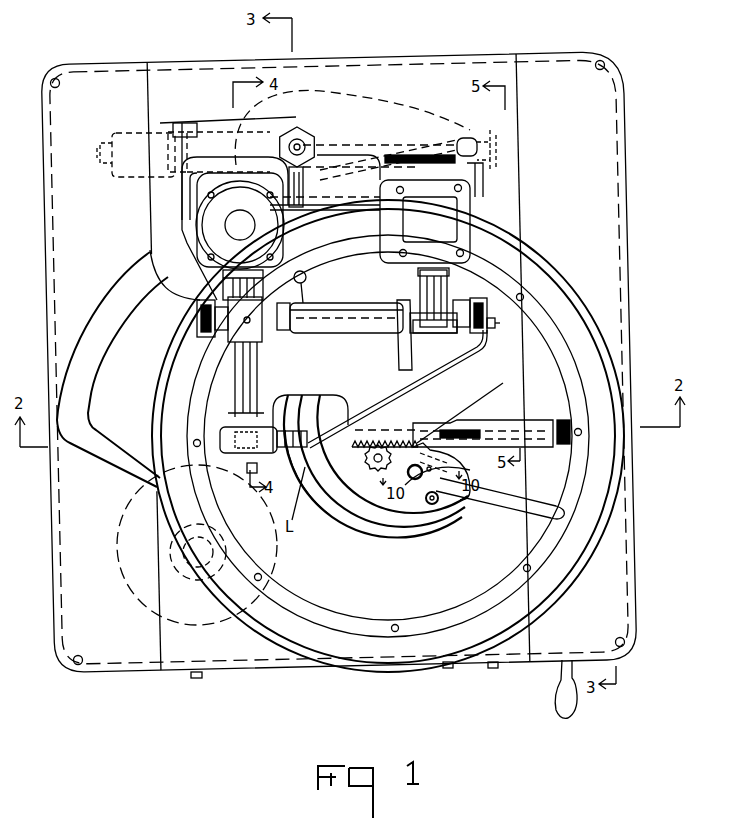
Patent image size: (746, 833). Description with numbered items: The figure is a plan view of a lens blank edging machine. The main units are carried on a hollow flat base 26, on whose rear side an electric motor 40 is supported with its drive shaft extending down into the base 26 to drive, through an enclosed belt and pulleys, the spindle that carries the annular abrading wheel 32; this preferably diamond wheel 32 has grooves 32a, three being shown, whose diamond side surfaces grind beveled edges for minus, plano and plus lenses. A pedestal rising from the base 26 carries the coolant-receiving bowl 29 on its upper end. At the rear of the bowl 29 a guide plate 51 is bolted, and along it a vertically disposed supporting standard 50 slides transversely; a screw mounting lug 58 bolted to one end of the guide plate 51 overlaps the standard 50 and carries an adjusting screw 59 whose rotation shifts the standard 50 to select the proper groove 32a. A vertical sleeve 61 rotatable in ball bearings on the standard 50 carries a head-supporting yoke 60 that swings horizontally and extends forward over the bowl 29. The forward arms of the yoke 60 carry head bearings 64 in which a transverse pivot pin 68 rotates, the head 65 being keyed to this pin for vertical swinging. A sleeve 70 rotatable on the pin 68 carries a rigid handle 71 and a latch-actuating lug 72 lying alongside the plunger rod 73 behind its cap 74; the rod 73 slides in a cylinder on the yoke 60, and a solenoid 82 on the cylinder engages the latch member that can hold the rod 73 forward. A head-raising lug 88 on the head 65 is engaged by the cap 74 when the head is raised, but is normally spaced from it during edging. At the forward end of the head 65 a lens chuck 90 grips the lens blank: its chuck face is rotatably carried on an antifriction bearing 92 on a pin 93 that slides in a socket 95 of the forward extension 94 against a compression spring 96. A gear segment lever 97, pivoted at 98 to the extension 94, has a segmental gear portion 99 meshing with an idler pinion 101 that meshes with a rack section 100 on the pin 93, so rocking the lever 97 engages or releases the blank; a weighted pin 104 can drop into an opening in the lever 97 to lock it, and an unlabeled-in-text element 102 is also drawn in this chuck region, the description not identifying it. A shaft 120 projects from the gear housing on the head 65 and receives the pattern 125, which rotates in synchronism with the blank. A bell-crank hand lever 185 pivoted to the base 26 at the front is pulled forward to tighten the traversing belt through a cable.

The base 26 is at (587, 175).
The coolant-receiving bowl 29 is at (590, 332).
The abrading wheel 32 is at (410, 540).
The grooves 32a is at (395, 532).
The electric motor 40 is at (140, 553).
The supporting standard 50 is at (203, 147).
The guide plate 51 is at (337, 190).
The screw mounting lug 58 is at (495, 170).
The adjusting screw 59 is at (396, 153).
The head-supporting yoke 60 is at (158, 206).
The vertical sleeve 61 is at (299, 133).
The head bearings 64 is at (202, 330).
The head 65 is at (463, 362).
The transverse pivot pin 68 is at (350, 312).
The sleeve 70 is at (372, 305).
The handle 71 is at (303, 270).
The latch-actuating lug 72 is at (405, 334).
The plunger rod 73 is at (427, 303).
The cap 74 is at (427, 334).
The solenoid 82 is at (428, 212).
The head-raising lug 88 is at (489, 325).
The lens chuck 90 is at (313, 510).
The antifriction bearing 92 is at (317, 395).
The pin 93 is at (370, 433).
The forward extension 94 is at (447, 487).
The socket 95 is at (380, 428).
The compression spring 96 is at (478, 423).
The gear segment lever 97 is at (503, 493).
The pivot 98 is at (436, 504).
The segmental gear portion 99 is at (415, 446).
The rack section 100 is at (388, 440).
The idler pinion 101 is at (373, 470).
The link 102 is at (474, 406).
The weighted pin 104 is at (413, 527).
The shaft 120 is at (287, 172).
The pattern 125 is at (325, 150).
The hand lever 185 is at (578, 704).